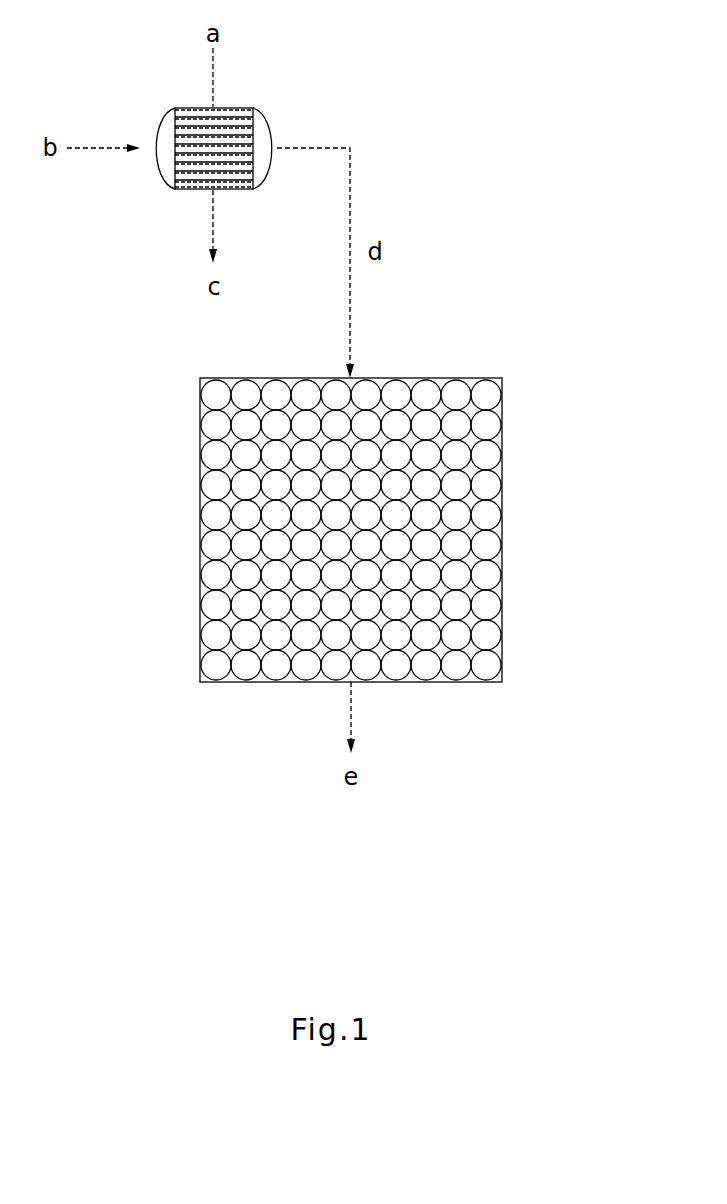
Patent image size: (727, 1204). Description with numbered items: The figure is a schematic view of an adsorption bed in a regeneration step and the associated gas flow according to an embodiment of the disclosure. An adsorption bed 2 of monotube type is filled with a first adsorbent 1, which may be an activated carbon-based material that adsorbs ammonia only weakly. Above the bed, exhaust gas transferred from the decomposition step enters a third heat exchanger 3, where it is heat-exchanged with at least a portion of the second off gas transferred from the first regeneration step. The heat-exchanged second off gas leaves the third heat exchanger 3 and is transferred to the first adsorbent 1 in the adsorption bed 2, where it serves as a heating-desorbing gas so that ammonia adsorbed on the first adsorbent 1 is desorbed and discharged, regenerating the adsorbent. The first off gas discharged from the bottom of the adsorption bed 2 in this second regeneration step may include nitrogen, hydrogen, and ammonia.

The first adsorbent 1 is at (487, 545).
The adsorption bed 2 is at (502, 378).
The third heat exchanger 3 is at (273, 127).